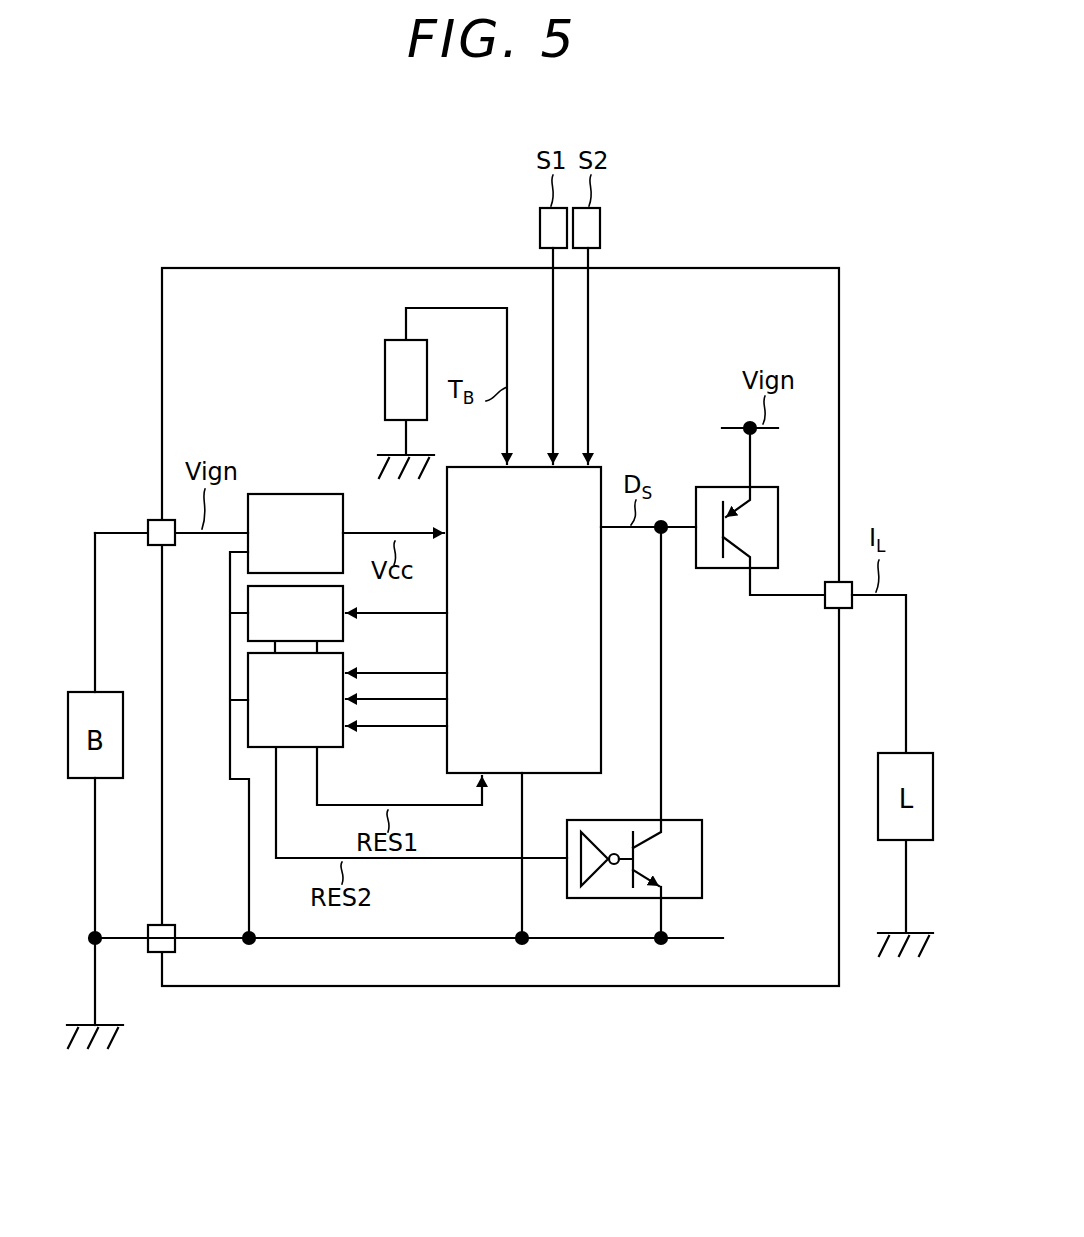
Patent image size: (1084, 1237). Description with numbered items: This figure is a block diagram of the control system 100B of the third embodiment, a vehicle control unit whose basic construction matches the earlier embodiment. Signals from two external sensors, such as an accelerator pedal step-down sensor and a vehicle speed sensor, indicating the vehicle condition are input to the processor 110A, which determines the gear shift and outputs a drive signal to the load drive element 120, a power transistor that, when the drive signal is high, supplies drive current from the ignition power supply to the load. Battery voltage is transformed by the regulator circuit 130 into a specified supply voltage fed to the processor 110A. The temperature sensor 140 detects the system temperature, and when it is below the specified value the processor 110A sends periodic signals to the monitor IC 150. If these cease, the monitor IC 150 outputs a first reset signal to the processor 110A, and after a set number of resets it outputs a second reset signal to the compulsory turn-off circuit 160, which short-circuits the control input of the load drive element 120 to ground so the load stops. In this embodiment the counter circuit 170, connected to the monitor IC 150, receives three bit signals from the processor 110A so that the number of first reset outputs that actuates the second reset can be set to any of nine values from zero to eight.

The control system 100B is at (745, 268).
The CPU 110A is at (603, 460).
The load drive element 120 is at (708, 570).
The regulator circuit 130 is at (302, 494).
The temperature sensor 140 is at (386, 338).
The monitor IC 150 is at (248, 598).
The compulsory turn-off circuit 160 is at (703, 851).
The counter circuit 170 is at (248, 671).